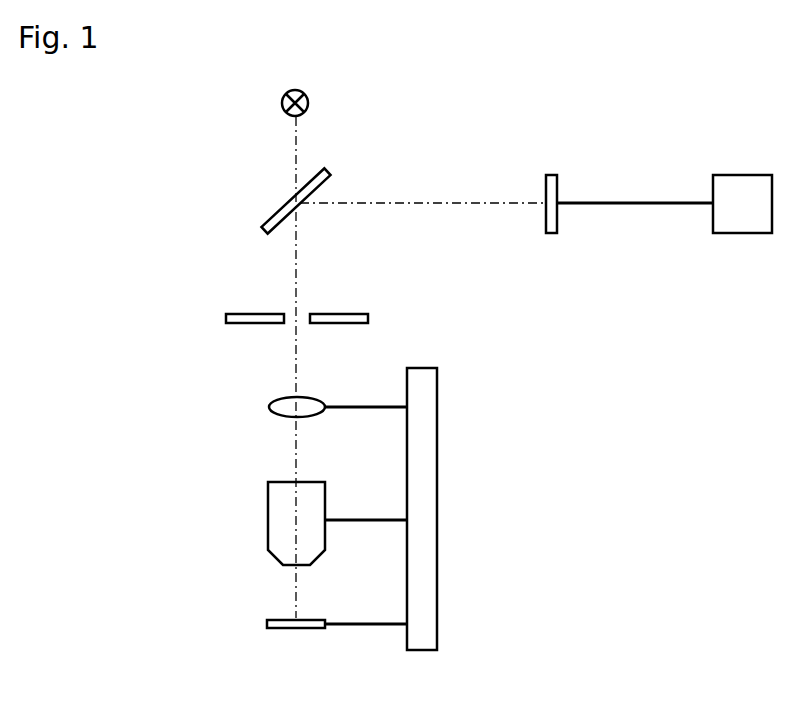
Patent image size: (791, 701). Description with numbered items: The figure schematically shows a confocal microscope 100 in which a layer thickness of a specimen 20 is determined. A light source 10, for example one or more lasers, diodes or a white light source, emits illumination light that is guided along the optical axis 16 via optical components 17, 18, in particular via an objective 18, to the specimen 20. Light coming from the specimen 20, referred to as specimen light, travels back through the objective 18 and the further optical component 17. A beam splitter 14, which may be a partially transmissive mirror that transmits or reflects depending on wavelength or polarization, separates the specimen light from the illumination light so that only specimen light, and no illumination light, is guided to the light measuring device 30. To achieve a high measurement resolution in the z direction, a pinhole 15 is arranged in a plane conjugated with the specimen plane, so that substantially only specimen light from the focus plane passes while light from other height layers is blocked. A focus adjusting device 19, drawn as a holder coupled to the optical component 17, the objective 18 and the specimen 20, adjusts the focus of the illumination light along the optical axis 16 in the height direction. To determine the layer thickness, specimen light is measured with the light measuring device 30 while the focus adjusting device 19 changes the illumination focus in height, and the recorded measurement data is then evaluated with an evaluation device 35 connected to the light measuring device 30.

The light source 10 is at (309, 99).
The beam splitter 14 is at (281, 207).
The pinhole 15 is at (240, 313).
The optical axis 16 is at (300, 341).
The optical component 17 is at (275, 401).
The objective 18 is at (268, 522).
The focus adjusting device 19 is at (438, 485).
The specimen 20 is at (268, 619).
The light measuring device 30 is at (546, 174).
The evaluation device 35 is at (733, 175).
The confocal microscope 100 is at (652, 109).